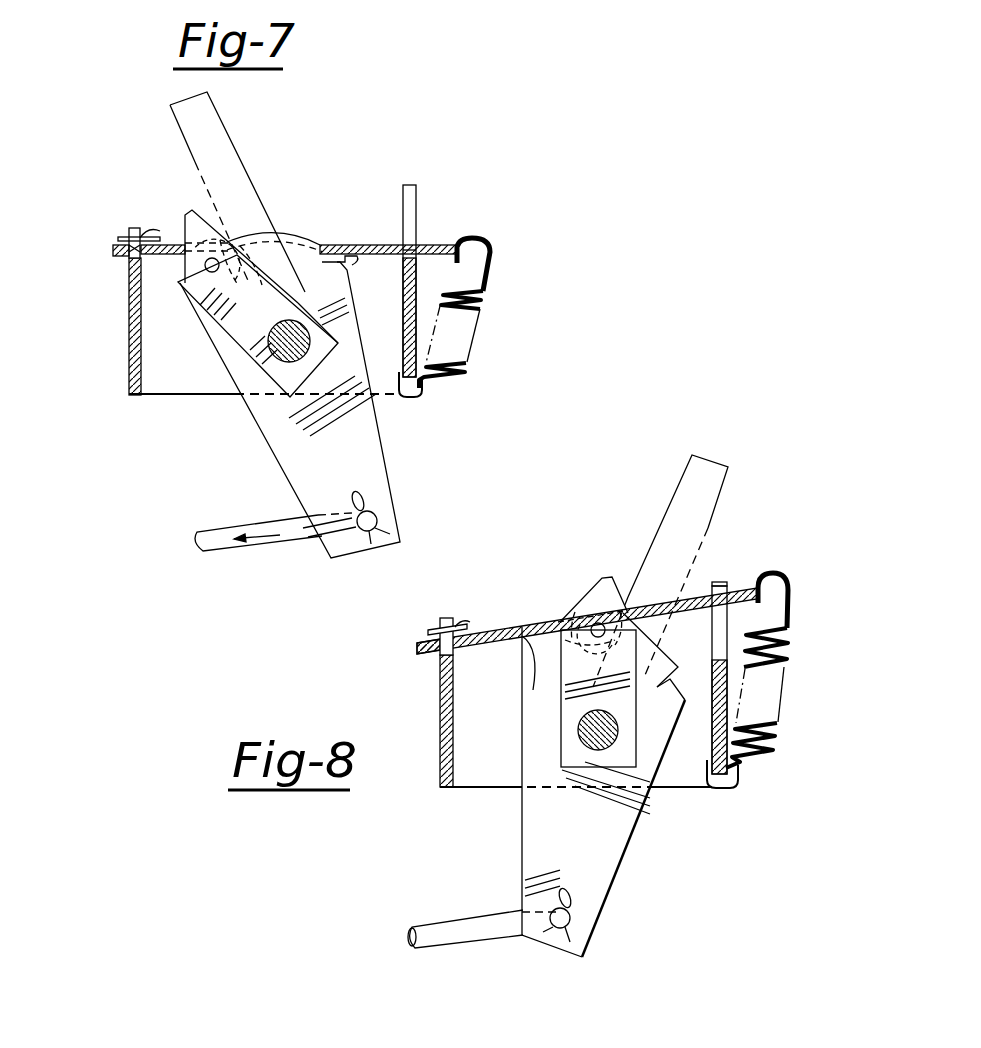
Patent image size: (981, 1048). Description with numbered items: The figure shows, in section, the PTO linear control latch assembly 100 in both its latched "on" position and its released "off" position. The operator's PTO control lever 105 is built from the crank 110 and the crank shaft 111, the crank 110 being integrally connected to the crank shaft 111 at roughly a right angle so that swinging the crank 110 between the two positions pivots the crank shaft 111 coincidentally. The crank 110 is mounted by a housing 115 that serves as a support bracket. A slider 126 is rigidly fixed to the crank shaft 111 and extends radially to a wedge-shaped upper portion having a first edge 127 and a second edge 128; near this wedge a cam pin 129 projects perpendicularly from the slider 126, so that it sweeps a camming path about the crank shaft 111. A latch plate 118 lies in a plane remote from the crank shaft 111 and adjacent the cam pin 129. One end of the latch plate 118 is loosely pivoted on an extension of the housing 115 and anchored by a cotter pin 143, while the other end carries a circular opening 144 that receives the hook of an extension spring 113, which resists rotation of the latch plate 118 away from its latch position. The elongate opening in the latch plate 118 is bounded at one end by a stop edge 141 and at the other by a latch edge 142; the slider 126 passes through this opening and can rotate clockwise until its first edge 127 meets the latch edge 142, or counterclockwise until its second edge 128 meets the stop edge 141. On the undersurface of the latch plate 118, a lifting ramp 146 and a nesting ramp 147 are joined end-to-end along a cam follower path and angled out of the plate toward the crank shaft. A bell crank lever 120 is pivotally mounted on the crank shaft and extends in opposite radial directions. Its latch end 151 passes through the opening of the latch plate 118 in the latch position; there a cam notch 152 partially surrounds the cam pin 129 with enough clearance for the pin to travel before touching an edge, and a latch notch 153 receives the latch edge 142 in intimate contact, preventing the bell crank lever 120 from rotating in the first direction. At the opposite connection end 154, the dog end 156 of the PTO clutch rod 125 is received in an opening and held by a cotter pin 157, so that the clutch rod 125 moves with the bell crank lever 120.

In FIG. 7, the PTO linear control latch assembly 100 is at (490, 201).
In FIG. 8, the PTO linear control latch assembly 100 is at (795, 555).
In FIG. 7, the PTO control lever 105 is at (340, 135).
In FIG. 8, the PTO control lever 105 is at (584, 546).
In FIG. 7, the crank 110 is at (213, 124).
In FIG. 8, the crank 110 is at (688, 532).
In FIG. 7, the crank shaft 111 is at (283, 378).
In FIG. 8, the crank shaft 111 is at (610, 748).
In FIG. 7, the extension spring 113 is at (467, 323).
In FIG. 8, the extension spring 113 is at (760, 703).
In FIG. 7, the housing 115 is at (133, 228).
In FIG. 8, the housing 115 is at (445, 618).
In FIG. 7, the latch plate 118 is at (428, 243).
In FIG. 8, the latch plate 118 is at (700, 588).
In FIG. 7, the bell crank lever 120 is at (278, 450).
In FIG. 8, the bell crank lever 120 is at (600, 865).
In FIG. 7, the PTO clutch rod 125 is at (228, 540).
In FIG. 8, the PTO clutch rod 125 is at (483, 925).
In FIG. 7, the slider 126 is at (227, 242).
In FIG. 8, the slider 126 is at (604, 577).
In FIG. 7, the first edge 127 is at (210, 222).
In FIG. 8, the first edge 127 is at (618, 597).
In FIG. 7, the second edge 128 is at (185, 230).
In FIG. 8, the second edge 128 is at (598, 587).
In FIG. 7, the cam pin 129 is at (208, 272).
In FIG. 8, the cam pin 129 is at (592, 628).
In FIG. 7, the stop edge 141 is at (131, 268).
In FIG. 8, the stop edge 141 is at (497, 650).
In FIG. 7, the latch edge 142 is at (329, 246).
In FIG. 8, the latch edge 142 is at (628, 618).
In FIG. 7, the cotter pin 143 is at (118, 233).
In FIG. 8, the cotter pin 143 is at (438, 636).
In FIG. 7, the circular opening 144 is at (455, 237).
In FIG. 8, the circular opening 144 is at (763, 572).
In FIG. 7, the lifting ramp 146 is at (270, 290).
In FIG. 8, the lifting ramp 146 is at (543, 630).
In FIG. 7, the nesting ramp 147 is at (290, 276).
In FIG. 8, the nesting ramp 147 is at (533, 650).
In FIG. 7, the latch end 151 is at (280, 226).
In FIG. 8, the latch end 151 is at (686, 702).
In FIG. 7, the cam notch 152 is at (235, 300).
In FIG. 8, the cam notch 152 is at (674, 652).
In FIG. 7, the latch notch 153 is at (350, 263).
In FIG. 8, the latch notch 153 is at (660, 688).
In FIG. 7, the connection end 154 is at (406, 512).
In FIG. 8, the connection end 154 is at (613, 930).
In FIG. 7, the dog end 156 is at (332, 553).
In FIG. 8, the dog end 156 is at (593, 930).
In FIG. 7, the cotter pin 157 is at (362, 490).
In FIG. 8, the cotter pin 157 is at (565, 902).